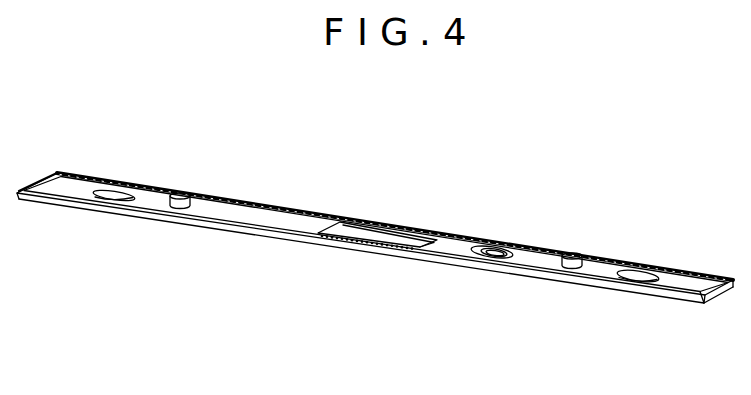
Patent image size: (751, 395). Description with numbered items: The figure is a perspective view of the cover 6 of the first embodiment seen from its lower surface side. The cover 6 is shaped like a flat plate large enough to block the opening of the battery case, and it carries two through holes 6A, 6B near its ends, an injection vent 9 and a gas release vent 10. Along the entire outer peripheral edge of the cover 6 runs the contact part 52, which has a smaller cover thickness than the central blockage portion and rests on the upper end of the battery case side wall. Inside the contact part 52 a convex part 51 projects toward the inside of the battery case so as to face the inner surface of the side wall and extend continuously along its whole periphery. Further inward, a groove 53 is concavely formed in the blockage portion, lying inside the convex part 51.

The cover 6 is at (225, 208).
The through hole 6A is at (121, 194).
The through hole 6B is at (638, 276).
The injection vent 9 is at (503, 249).
The gas release vent 10 is at (377, 233).
The convex part 51 is at (695, 273).
The contact part 52 is at (623, 292).
The groove 53 is at (551, 250).